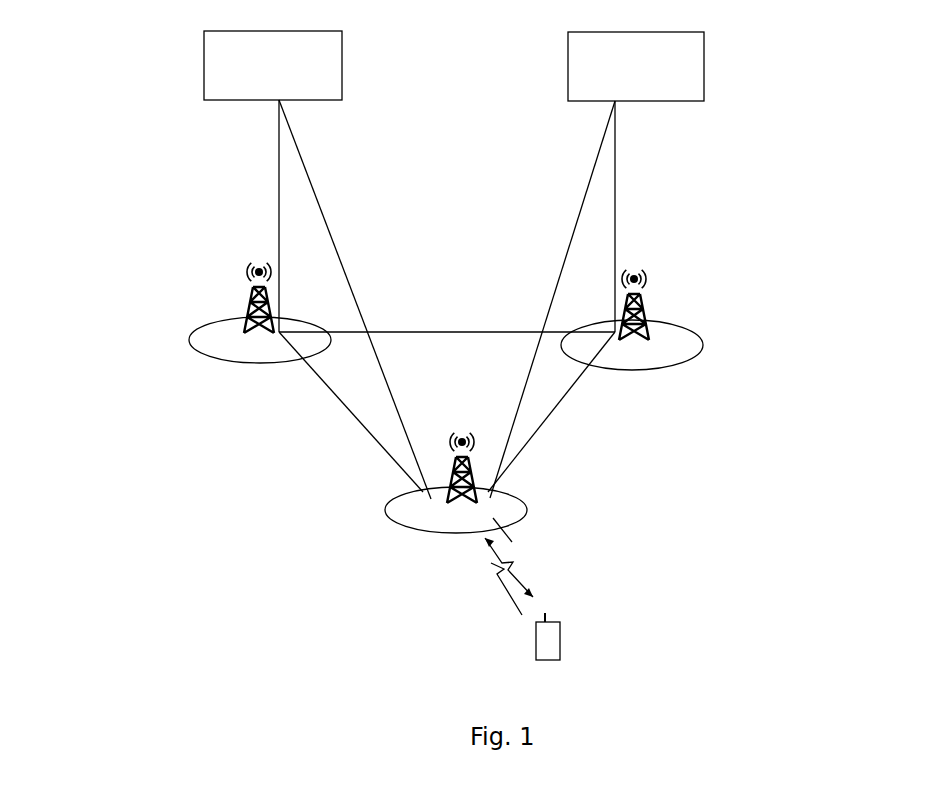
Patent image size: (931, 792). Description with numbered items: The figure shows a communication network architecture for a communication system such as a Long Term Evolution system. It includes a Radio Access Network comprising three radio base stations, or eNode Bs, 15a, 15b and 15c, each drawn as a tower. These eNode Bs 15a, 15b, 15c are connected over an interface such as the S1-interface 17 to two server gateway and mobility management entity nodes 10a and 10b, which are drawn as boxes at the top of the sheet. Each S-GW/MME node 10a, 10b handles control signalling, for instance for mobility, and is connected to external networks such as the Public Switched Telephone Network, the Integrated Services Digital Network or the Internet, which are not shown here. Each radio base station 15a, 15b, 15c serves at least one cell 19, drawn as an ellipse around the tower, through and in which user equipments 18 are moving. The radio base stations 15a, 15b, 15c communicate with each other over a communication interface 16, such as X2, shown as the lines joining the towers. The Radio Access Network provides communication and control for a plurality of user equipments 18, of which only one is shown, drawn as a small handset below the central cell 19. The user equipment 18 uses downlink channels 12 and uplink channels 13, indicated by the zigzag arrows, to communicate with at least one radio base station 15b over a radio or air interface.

The server gateway and mobility management entity node 10a is at (263, 79).
The server gateway and mobility management entity node 10b is at (621, 79).
The S1-interface 17 is at (279, 193).
The communication interface 16 is at (430, 332).
The radio base station 15a is at (255, 288).
The radio base station 15b is at (447, 502).
The radio base station 15c is at (645, 292).
The cell 19 is at (190, 335).
The downlink channel 12 is at (512, 542).
The uplink channel 13 is at (505, 590).
The user equipment 18 is at (560, 635).